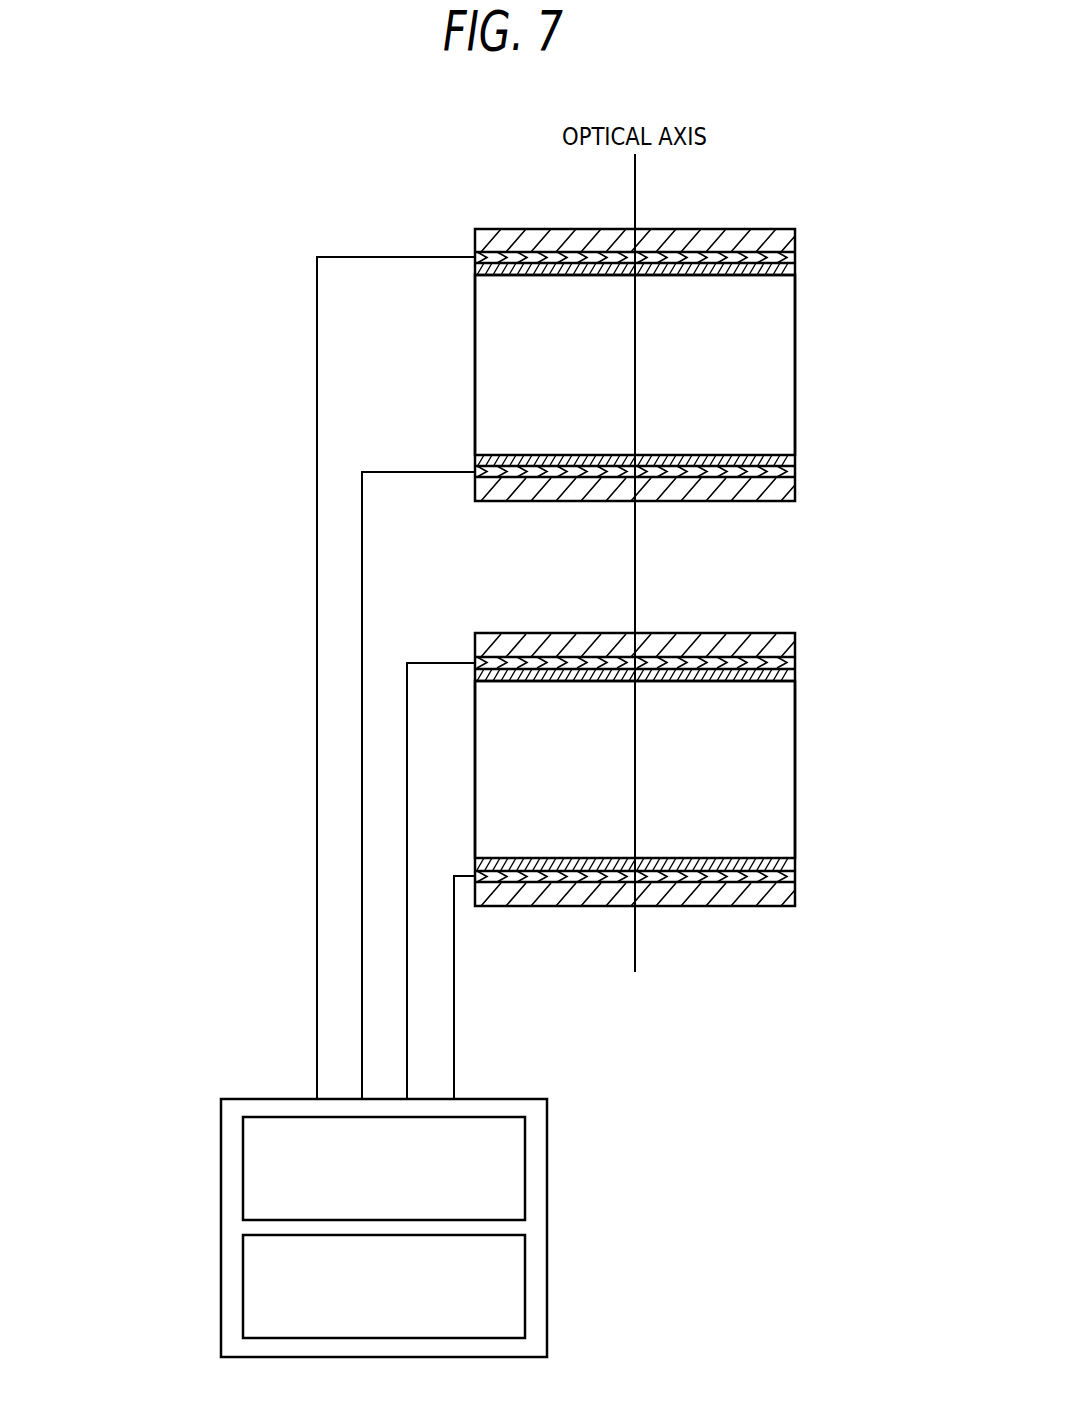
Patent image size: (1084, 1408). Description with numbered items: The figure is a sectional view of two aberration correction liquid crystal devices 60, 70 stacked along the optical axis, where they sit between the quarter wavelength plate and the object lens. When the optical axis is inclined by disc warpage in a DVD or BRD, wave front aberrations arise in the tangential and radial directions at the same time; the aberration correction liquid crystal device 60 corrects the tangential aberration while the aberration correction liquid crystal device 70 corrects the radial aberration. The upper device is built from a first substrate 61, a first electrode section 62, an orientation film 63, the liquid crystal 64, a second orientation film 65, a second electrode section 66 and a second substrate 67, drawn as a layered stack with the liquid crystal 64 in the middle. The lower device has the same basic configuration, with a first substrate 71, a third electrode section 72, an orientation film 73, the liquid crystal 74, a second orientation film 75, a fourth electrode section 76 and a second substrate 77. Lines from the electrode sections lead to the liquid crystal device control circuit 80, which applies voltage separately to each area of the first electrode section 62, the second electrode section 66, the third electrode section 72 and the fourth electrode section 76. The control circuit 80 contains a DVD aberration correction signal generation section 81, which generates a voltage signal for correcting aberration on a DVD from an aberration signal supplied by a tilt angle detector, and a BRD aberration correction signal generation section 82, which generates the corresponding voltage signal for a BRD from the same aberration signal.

The aberration correction liquid crystal device 60 is at (731, 206).
The first substrate 61 is at (793, 239).
The first electrode section 62 is at (795, 258).
The orientation film 63 is at (795, 268).
The liquid crystal 64 is at (790, 360).
The orientation film 65 is at (793, 459).
The second electrode section 66 is at (795, 472).
The second substrate 67 is at (795, 490).
The aberration correction liquid crystal device 70 is at (732, 611).
The first substrate 71 is at (793, 643).
The third electrode section 72 is at (795, 662).
The orientation film 73 is at (795, 674).
The liquid crystal 74 is at (790, 765).
The orientation film 75 is at (793, 863).
The fourth electrode section 76 is at (795, 876).
The second substrate 77 is at (795, 894).
The liquid crystal device control circuit 80 is at (219, 1229).
The DVD aberration correction signal generation section 81 is at (526, 1168).
The BRD aberration correction signal generation section 82 is at (526, 1286).